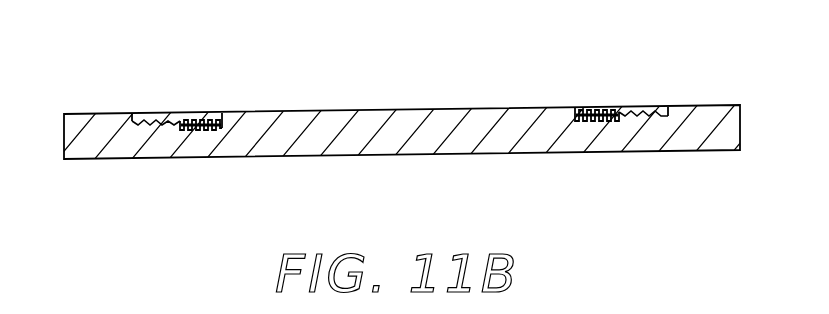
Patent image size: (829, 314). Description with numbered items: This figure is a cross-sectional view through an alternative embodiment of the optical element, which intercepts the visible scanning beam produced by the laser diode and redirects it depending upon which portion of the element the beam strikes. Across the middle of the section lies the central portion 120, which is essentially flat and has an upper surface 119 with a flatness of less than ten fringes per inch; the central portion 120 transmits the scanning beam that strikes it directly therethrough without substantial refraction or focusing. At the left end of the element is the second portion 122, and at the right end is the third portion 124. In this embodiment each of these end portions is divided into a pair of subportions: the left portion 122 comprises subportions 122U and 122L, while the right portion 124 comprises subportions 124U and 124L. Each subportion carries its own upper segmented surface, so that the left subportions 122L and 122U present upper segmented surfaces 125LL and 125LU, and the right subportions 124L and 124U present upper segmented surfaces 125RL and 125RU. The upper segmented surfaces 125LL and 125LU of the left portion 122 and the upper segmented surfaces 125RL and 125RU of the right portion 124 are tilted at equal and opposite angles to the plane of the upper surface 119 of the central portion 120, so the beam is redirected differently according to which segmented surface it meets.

The upper surface 119 is at (434, 117).
The central portion 120 is at (343, 117).
The second portion 122 is at (165, 125).
The subportion 122L is at (154, 113).
The subportion 122U is at (198, 113).
The upper segmented surface 125LL is at (148, 125).
The upper segmented surface 125LU is at (215, 126).
The third portion 124 is at (650, 131).
The subportion 124U is at (608, 108).
The subportion 124L is at (646, 107).
The upper segmented surface 125RL is at (602, 124).
The upper segmented surface 125RU is at (689, 118).